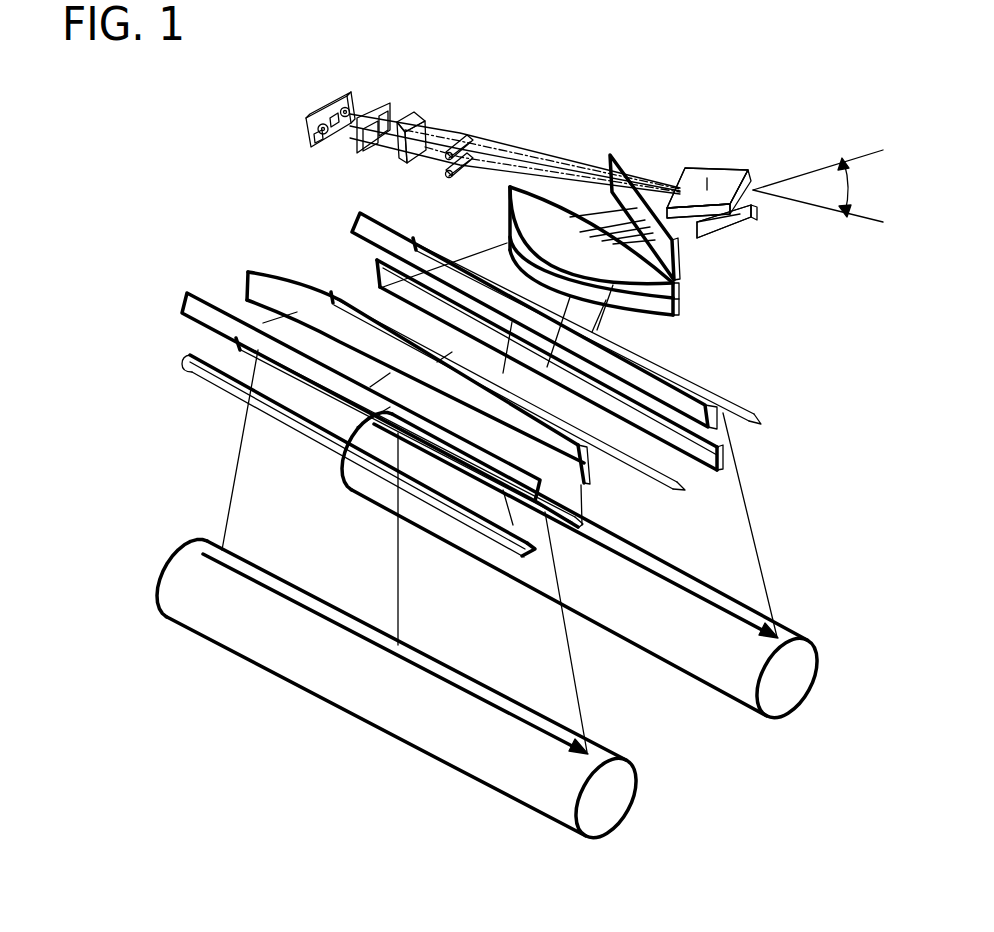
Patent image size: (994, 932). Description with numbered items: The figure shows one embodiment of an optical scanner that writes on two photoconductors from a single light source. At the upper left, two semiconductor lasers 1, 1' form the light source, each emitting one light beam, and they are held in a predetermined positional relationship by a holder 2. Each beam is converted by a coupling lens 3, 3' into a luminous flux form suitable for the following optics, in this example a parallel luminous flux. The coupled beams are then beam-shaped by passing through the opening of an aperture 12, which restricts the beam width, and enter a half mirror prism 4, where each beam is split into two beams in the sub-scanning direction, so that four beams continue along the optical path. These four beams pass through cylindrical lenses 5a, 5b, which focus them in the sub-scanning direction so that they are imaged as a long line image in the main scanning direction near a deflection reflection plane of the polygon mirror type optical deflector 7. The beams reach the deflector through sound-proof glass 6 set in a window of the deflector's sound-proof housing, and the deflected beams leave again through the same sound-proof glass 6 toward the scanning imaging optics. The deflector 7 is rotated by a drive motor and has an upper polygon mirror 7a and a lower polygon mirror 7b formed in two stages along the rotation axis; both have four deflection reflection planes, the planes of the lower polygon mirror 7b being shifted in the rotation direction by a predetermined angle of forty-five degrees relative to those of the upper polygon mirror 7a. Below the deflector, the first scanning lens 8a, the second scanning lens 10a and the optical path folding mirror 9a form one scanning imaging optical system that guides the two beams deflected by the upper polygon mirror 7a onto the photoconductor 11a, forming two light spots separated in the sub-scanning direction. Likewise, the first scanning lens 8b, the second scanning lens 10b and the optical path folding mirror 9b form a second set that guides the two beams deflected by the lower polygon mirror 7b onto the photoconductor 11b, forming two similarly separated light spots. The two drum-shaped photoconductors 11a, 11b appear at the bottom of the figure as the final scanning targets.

The semiconductor laser 1 is at (326, 82).
The semiconductor laser 1' is at (303, 100).
The holder 2 is at (349, 93).
The coupling lens 3 is at (362, 90).
The coupling lens 3' is at (328, 162).
The aperture 12 is at (391, 108).
The half mirror prism 4 is at (424, 121).
The cylindrical lens 5a is at (470, 137).
The cylindrical lens 5b is at (460, 174).
The sound-proof glass 6 is at (620, 160).
The polygon mirror type optical deflector 7 is at (717, 156).
The upper polygon mirror 7a is at (733, 168).
The lower polygon mirror 7b is at (744, 220).
The first scanning lens 8a is at (688, 288).
The first scanning lens 8b is at (688, 308).
The optical path folding mirror 9a is at (205, 320).
The optical path folding mirror 9b is at (417, 233).
The second scanning lens 10a is at (257, 290).
The second scanning lens 10b is at (373, 273).
The photoconductor 11a is at (405, 727).
The photoconductor 11b is at (637, 637).